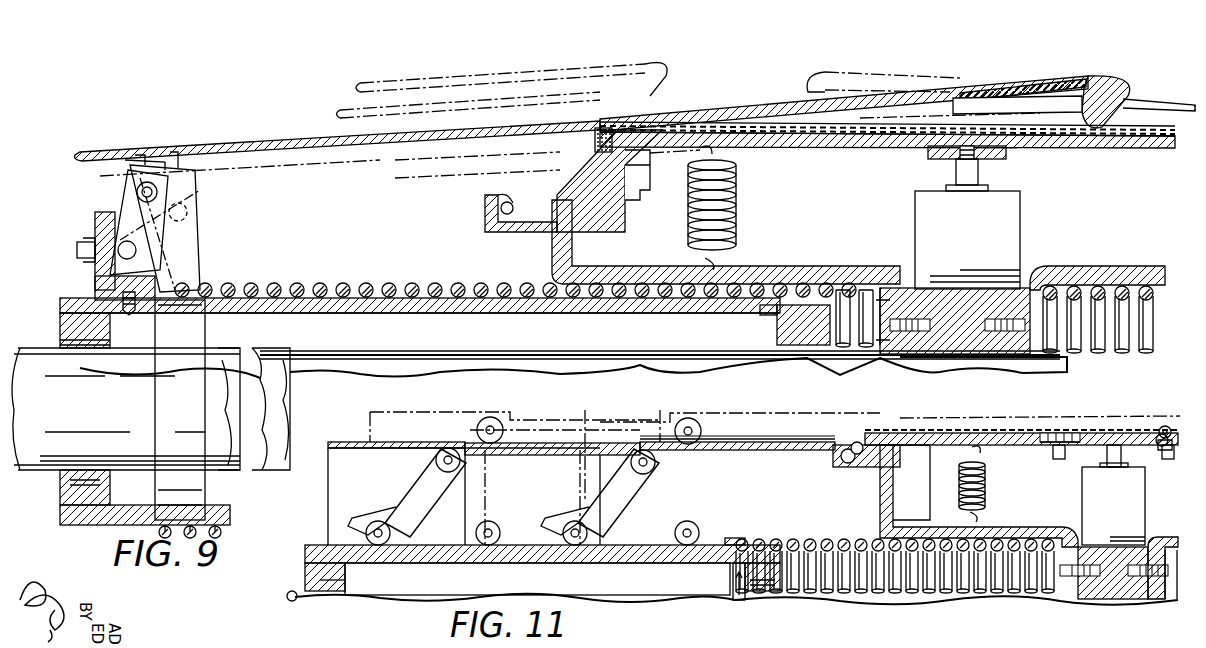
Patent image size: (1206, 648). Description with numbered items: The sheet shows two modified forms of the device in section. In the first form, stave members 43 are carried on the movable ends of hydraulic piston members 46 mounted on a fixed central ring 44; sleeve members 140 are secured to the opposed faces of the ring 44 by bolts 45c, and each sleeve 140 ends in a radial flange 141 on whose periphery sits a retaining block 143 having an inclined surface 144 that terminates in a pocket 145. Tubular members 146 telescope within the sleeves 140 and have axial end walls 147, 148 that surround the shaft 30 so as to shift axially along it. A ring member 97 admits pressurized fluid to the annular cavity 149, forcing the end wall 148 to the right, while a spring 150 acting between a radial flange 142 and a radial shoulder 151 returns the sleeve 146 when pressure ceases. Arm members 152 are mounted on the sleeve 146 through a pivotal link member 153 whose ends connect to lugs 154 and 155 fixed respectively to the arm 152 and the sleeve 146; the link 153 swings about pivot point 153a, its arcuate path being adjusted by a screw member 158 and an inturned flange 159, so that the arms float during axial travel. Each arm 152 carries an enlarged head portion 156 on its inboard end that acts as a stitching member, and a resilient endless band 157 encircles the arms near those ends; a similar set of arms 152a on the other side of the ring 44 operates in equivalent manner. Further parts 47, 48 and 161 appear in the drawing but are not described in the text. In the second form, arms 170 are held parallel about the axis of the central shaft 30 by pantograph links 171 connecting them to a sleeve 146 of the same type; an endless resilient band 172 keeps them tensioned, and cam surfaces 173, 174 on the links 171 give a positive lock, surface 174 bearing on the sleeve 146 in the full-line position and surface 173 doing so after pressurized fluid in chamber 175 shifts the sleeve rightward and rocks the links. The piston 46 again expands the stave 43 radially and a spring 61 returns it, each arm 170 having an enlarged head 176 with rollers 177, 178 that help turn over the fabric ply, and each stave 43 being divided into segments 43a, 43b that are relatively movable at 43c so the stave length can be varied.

In FIG. 9, the arm members 152 is at (318, 140).
In FIG. 9, the arms 152a is at (1160, 100).
In FIG. 9, the resilient endless band 157 is at (1011, 96).
In FIG. 9, the enlarged head portion 156 is at (1090, 110).
In FIG. 9, the stave members 43 is at (1074, 148).
In FIG. 11, the stave members 43 is at (1014, 446).
In FIG. 9, the lug 154 is at (178, 180).
In FIG. 9, the pivotal link member 153 is at (178, 220).
In FIG. 9, the pivot point 153a is at (120, 250).
In FIG. 9, the inturned flange 159 is at (137, 215).
In FIG. 9, the screw member 158 is at (77, 250).
In FIG. 9, the lug 155 is at (95, 282).
In FIG. 9, the radial shoulder 151 is at (158, 292).
In FIG. 9, the axial end wall 147 is at (62, 328).
In FIG. 9, the tubular member 146 is at (334, 288).
In FIG. 11, the tubular member 146 is at (410, 562).
In FIG. 9, the spring 150 is at (282, 286).
In FIG. 9, the annular cavity 149 is at (395, 296).
In FIG. 9, the radial flange 141 is at (566, 240).
In FIG. 9, the inclined surface 144 is at (530, 228).
In FIG. 9, the pocket 145 is at (490, 221).
In FIG. 11, the pocket 145 is at (846, 468).
In FIG. 9, the retaining block 143 is at (620, 198).
In FIG. 9, the sleeve member 140 is at (742, 265).
In FIG. 9, the axial end wall 148 is at (808, 306).
In FIG. 11, the axial end wall 148 is at (766, 591).
In FIG. 9, the radial flange 142 is at (886, 350).
In FIG. 9, the bolts 45c is at (884, 288).
In FIG. 9, the post 47 is at (956, 168).
In FIG. 11, the post 47 is at (1130, 466).
In FIG. 9, the mounting bracket 48 is at (994, 158).
In FIG. 9, the hydraulic piston member 46 is at (1019, 226).
In FIG. 11, the hydraulic piston member 46 is at (1082, 494).
In FIG. 9, the fixed central ring 44 is at (1024, 286).
In FIG. 11, the fixed central ring 44 is at (1119, 568).
In FIG. 9, the ring member 97 is at (205, 334).
In FIG. 11, the endless resilient band 172 is at (580, 426).
In FIG. 11, the pantograph links 171 is at (414, 490).
In FIG. 11, the cam surface 173 is at (349, 520).
In FIG. 11, the cam surface 174 is at (422, 538).
In FIG. 11, the central shaft 30 is at (288, 596).
In FIG. 11, the arms 170 is at (752, 448).
In FIG. 11, the enlarged heads 176 is at (816, 442).
In FIG. 11, the roller 177 is at (852, 442).
In FIG. 11, the roller 178 is at (868, 442).
In FIG. 11, the stave segment 43a is at (950, 444).
In FIG. 11, the stave segment 43b is at (1185, 392).
In FIG. 11, the relatively movable connection 43c is at (1055, 450).
In FIG. 11, the spring 61 is at (986, 499).
In FIG. 11, the spring bank 161 is at (895, 593).
In FIG. 11, the chamber 175 is at (736, 598).